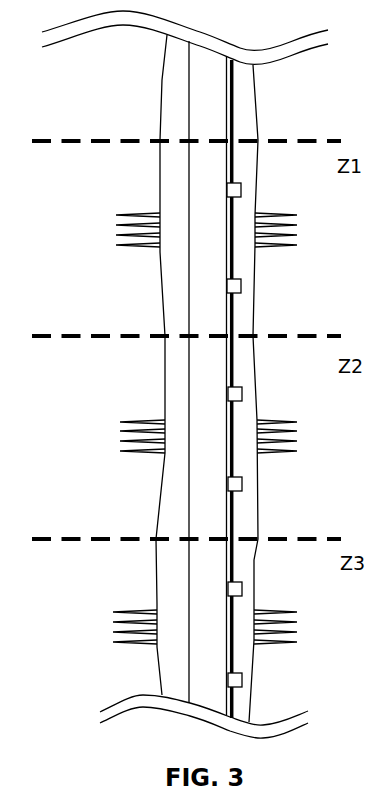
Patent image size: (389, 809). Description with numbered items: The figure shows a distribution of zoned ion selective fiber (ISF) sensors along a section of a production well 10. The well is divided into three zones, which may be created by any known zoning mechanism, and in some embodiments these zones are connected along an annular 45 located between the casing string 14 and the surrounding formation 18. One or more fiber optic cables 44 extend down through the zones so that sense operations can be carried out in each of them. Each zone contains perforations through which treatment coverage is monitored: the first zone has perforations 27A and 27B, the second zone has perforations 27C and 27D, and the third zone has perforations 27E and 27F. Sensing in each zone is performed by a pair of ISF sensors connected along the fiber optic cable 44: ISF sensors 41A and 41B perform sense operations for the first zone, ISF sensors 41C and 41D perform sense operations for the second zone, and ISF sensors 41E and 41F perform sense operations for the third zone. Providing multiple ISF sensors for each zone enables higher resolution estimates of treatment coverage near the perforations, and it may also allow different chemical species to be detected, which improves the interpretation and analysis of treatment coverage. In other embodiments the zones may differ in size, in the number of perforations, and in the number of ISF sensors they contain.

The well 10 is at (80, 759).
The casing string 14 is at (189, 110).
The formation 18 is at (150, 60).
The perforation 27A is at (108, 208).
The perforation 27B is at (309, 207).
The perforation 27C is at (111, 415).
The perforation 27D is at (309, 414).
The perforation 27E is at (101, 603).
The perforation 27F is at (304, 603).
The ISF sensor 41A is at (242, 190).
The ISF sensor 41B is at (242, 285).
The ISF sensor 41C is at (242, 393).
The ISF sensor 41D is at (242, 483).
The ISF sensor 41E is at (242, 588).
The ISF sensor 41F is at (242, 679).
The fiber optic cable 44 is at (233, 107).
The annular 45 is at (170, 125).